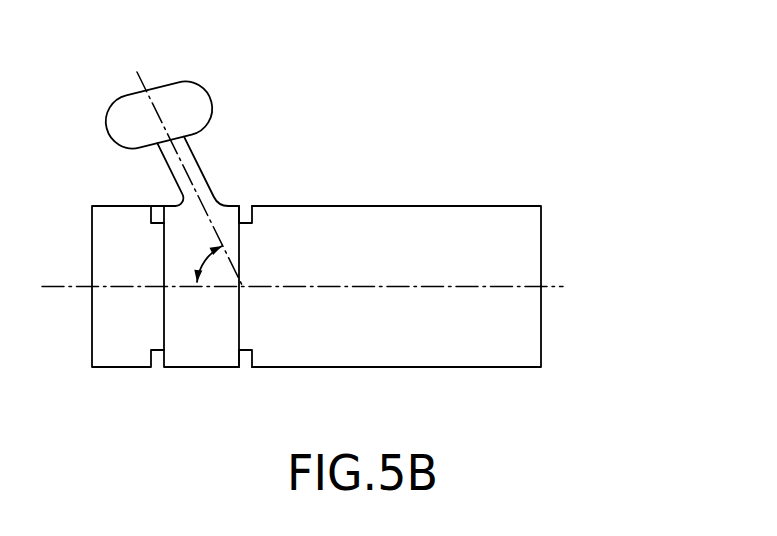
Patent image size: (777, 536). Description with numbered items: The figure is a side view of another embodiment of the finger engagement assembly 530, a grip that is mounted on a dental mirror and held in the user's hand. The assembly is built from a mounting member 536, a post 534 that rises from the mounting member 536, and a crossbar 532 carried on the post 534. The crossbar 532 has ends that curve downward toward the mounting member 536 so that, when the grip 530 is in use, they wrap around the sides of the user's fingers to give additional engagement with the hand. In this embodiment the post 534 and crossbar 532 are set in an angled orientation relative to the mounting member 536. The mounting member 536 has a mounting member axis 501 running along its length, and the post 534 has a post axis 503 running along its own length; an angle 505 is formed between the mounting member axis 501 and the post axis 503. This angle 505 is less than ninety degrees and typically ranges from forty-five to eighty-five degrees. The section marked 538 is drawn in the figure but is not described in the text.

The finger engagement assembly 530 is at (562, 150).
The mounting member axis 501 is at (558, 288).
The post axis 503 is at (141, 81).
The angle 505 is at (205, 261).
The crossbar 532 is at (190, 89).
The post 534 is at (198, 165).
The mounting member 536 is at (415, 324).
The intermediate section 538 is at (203, 348).